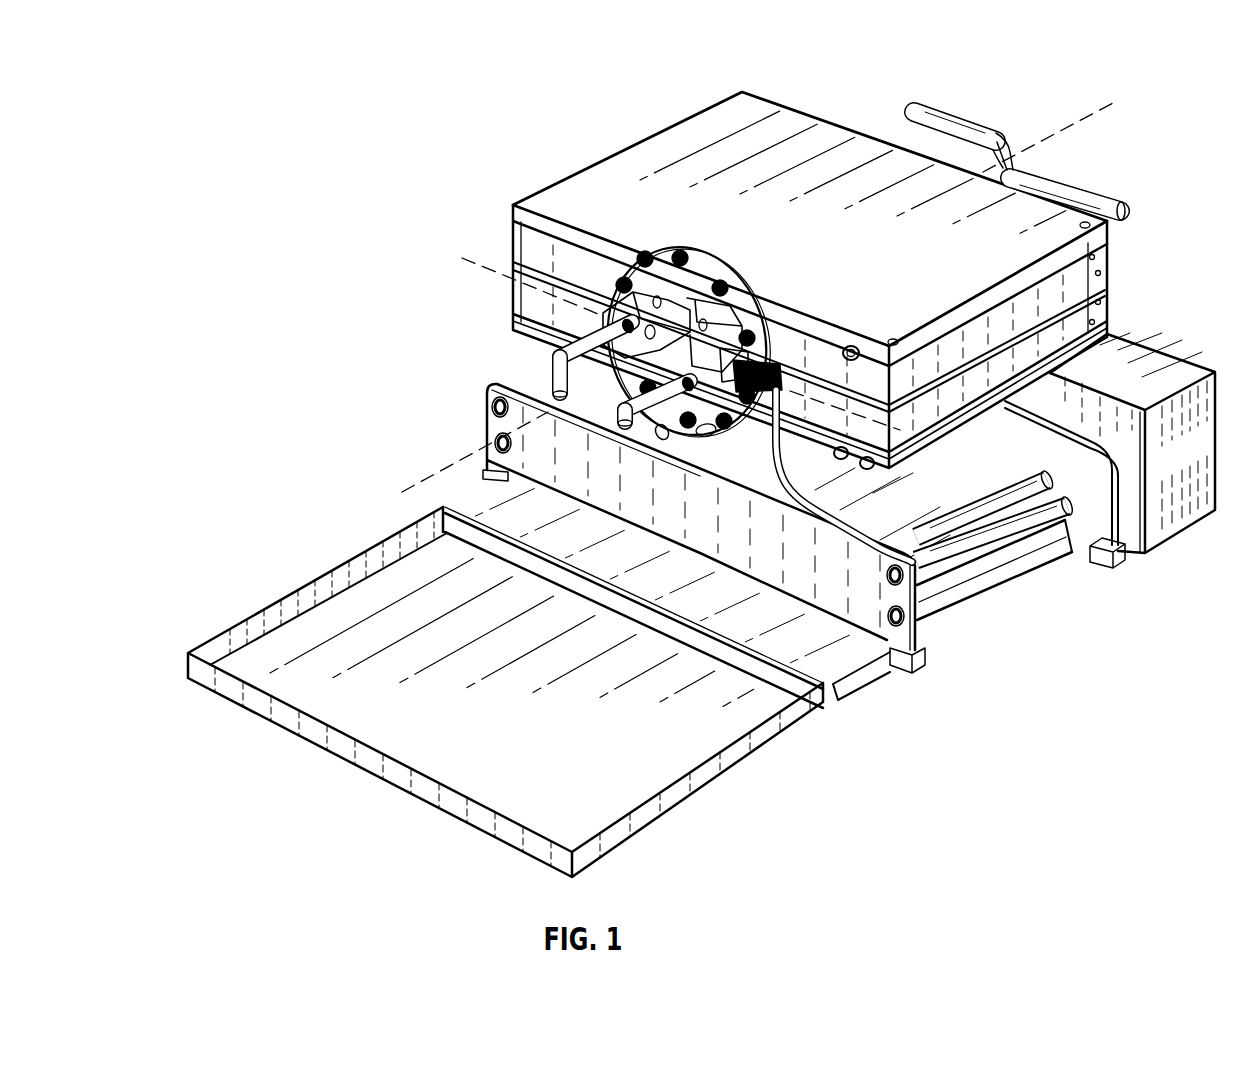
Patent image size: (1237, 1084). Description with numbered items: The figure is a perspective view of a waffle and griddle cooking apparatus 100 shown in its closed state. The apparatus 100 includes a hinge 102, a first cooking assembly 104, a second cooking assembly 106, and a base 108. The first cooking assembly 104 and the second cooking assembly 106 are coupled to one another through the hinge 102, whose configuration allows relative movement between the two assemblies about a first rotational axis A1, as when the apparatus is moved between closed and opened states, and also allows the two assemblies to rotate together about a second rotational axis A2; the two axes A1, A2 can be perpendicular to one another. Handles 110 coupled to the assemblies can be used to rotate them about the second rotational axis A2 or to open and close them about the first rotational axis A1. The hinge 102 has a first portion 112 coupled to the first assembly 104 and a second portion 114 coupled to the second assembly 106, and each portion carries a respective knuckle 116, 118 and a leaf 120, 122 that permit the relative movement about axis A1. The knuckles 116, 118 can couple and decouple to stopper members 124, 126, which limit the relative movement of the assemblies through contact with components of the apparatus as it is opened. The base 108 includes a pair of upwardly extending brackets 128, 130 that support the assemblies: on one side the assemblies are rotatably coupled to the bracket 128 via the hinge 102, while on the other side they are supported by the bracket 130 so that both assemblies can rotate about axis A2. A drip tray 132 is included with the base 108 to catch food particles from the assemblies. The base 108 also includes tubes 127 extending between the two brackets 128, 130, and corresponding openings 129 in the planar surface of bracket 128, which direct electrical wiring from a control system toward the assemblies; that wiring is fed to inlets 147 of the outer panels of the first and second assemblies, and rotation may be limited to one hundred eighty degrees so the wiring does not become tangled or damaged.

The waffle and griddle cooking apparatus 100 is at (318, 190).
The hinge 102 is at (742, 282).
The first cooking assembly 104 is at (652, 158).
The second cooking assembly 106 is at (1104, 312).
The base 108 is at (487, 418).
The handles 110 is at (1082, 183).
The first portion 112 is at (702, 247).
The second portion 114 is at (575, 335).
The knuckle 116 is at (626, 262).
The knuckle 118 is at (740, 400).
The leaf 120 is at (657, 260).
The leaf 122 is at (706, 426).
The stopper member 124 is at (560, 378).
The stopper member 126 is at (628, 426).
The tubes 127 is at (947, 590).
The bracket 128 is at (806, 598).
The openings 129 is at (884, 590).
The bracket 130 is at (1107, 507).
The drip tray 132 is at (703, 750).
The inlets 147 is at (855, 346).
The first rotational axis A1 is at (490, 272).
The second rotational axis A2 is at (1086, 117).